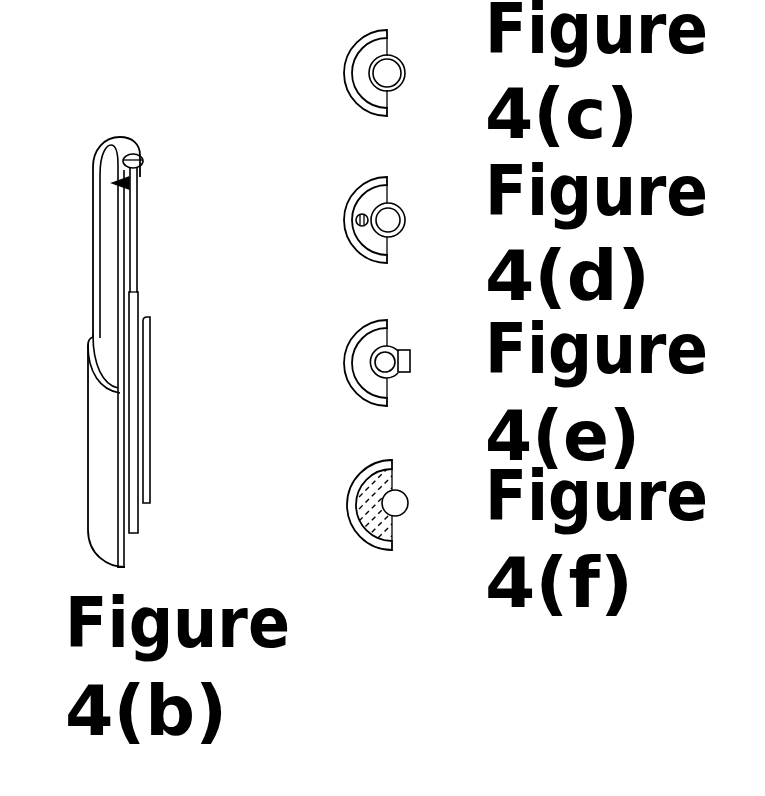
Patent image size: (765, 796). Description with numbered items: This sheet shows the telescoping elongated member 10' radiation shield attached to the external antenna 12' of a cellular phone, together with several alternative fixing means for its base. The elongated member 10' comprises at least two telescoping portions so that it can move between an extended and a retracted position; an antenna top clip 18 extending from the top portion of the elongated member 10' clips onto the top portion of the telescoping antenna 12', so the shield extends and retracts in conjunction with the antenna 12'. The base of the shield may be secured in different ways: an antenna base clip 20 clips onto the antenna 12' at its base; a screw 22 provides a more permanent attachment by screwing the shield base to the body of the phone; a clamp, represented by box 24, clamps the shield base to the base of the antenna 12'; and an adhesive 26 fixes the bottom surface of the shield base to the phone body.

In FIG. 4B, the telescoping elongated member radiation shield 10' is at (85, 352).
In FIG. 4B, the antenna 12' is at (182, 142).
In FIG. 4B, the antenna top clip 18 is at (138, 188).
In FIG. 4C, the antenna base clip 20 is at (397, 58).
In FIG. 4D, the screw 22 is at (367, 215).
In FIG. 4E, the clamp 24 is at (399, 350).
In FIG. 4F, the adhesive 26 is at (392, 482).